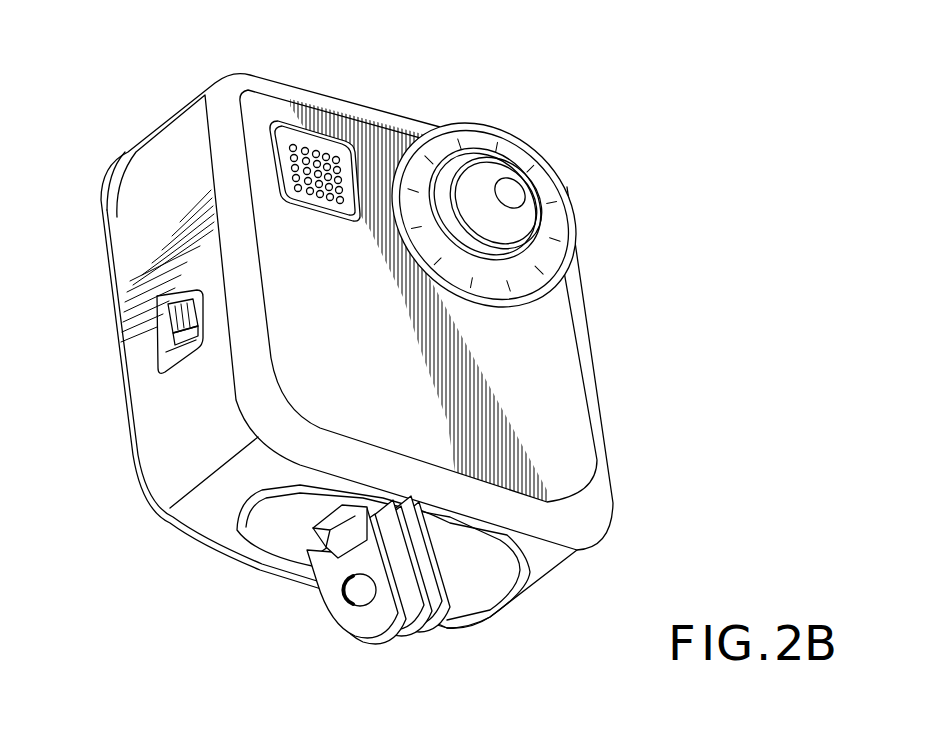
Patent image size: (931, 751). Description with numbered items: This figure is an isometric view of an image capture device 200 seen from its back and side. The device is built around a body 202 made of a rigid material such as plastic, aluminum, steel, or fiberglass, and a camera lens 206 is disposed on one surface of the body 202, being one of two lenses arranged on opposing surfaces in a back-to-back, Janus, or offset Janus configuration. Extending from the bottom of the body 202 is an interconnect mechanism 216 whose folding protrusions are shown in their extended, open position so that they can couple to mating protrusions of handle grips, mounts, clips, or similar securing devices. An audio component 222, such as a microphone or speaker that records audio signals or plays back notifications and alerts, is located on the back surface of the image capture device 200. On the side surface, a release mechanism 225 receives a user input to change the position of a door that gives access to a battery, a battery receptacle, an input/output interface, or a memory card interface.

The image capture device 200 is at (614, 136).
The body 202 is at (594, 352).
The camera lens 206 is at (510, 197).
The interconnect mechanism 216 is at (337, 583).
The audio component 222 is at (293, 145).
The release mechanism 225 is at (163, 336).